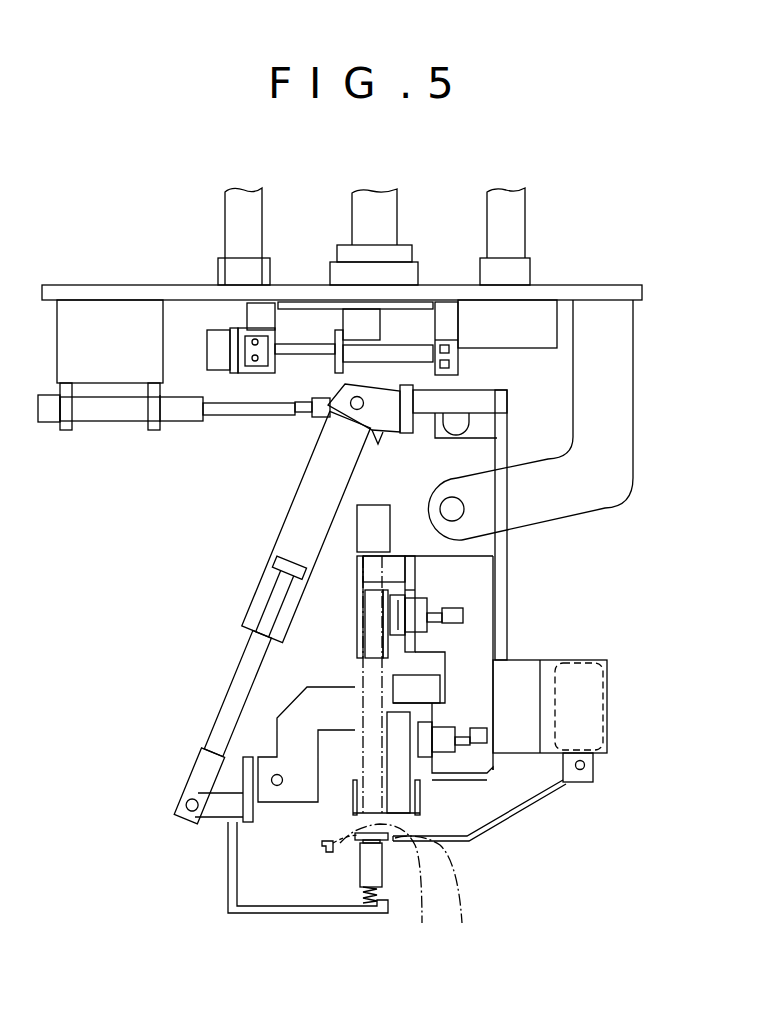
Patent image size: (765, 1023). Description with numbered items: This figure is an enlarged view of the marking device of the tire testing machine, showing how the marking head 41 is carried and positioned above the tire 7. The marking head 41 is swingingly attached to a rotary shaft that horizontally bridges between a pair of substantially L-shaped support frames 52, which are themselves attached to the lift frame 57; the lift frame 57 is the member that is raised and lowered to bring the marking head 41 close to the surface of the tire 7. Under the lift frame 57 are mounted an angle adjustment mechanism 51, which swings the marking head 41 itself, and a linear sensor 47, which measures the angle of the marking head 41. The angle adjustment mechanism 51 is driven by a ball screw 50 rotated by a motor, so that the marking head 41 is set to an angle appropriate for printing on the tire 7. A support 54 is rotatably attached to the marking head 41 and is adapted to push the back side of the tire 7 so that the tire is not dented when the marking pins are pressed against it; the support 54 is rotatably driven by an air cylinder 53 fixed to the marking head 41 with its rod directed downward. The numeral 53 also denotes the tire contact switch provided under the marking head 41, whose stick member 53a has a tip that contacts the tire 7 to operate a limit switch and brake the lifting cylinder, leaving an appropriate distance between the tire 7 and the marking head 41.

The lift frame 57 is at (73, 295).
The ball screw 50 is at (417, 343).
The angle adjustment mechanism 51 is at (511, 383).
The support frame 52 is at (613, 417).
The linear sensor 47 is at (113, 428).
The tire contact switch / air cylinder 53 is at (250, 605).
The marking head 41 is at (530, 623).
The stick member 53a is at (527, 812).
The tire 7 is at (460, 888).
The support 54 is at (380, 913).